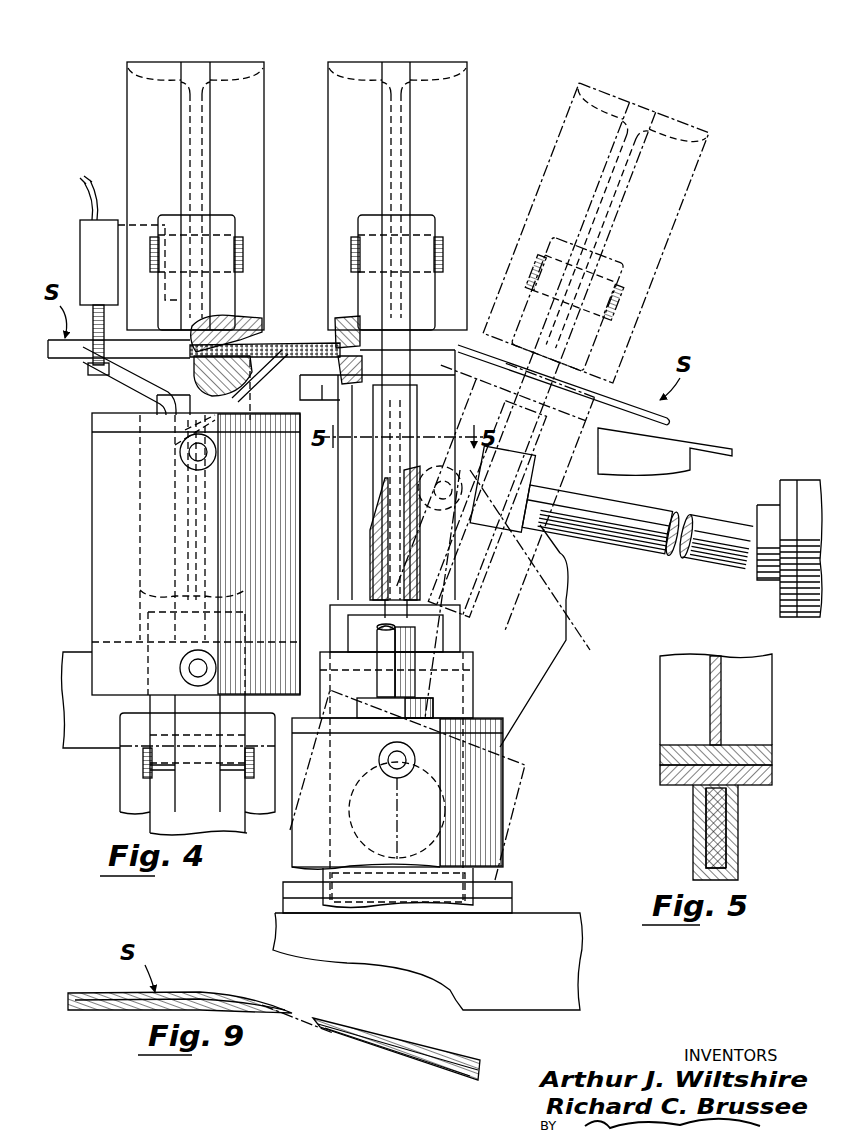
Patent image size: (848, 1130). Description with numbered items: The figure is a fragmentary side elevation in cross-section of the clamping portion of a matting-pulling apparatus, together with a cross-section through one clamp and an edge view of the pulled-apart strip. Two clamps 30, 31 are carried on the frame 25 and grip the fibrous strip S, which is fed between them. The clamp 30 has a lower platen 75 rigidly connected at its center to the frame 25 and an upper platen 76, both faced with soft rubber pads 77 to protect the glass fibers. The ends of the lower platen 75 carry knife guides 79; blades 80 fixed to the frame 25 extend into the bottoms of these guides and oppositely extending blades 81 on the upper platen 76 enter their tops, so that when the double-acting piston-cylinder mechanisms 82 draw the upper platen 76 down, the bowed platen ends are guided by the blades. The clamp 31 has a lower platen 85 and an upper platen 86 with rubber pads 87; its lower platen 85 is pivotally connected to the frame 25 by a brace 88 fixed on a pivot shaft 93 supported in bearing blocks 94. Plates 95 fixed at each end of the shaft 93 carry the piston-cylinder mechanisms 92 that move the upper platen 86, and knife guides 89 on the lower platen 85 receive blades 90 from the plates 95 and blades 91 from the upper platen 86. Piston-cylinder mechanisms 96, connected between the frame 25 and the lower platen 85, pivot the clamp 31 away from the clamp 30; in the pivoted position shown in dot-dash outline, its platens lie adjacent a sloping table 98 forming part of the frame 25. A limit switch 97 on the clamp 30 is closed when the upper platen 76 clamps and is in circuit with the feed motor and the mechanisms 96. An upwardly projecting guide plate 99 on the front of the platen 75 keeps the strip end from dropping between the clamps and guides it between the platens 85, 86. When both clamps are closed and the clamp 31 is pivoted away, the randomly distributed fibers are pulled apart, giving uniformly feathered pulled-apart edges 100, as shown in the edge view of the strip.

In FIG. 4, the frame 25 is at (536, 912).
In FIG. 4, the clamp 30 is at (192, 54).
In FIG. 4, the clamp 31 is at (404, 56).
In FIG. 4, the lower platen 75 is at (137, 406).
In FIG. 4, the upper platen 76 is at (268, 284).
In FIG. 4, the soft rubber pad 77 is at (162, 370).
In FIG. 4, the knife guide 79 is at (215, 520).
In FIG. 4, the blade 80 is at (205, 535).
In FIG. 4, the blade 81 is at (180, 430).
In FIG. 4, the double-acting piston-cylinder mechanism 82 is at (92, 592).
In FIG. 4, the lower platen 85 is at (336, 382).
In FIG. 4, the upper platen 86 is at (332, 320).
In FIG. 5, the upper platen 86 is at (660, 775).
In FIG. 4, the soft rubber pad 87 is at (248, 306).
In FIG. 4, the brace 88 is at (432, 930).
In FIG. 4, the knife guide 89 is at (378, 482).
In FIG. 5, the knife guide 89 is at (738, 818).
In FIG. 4, the blade 90 is at (380, 572).
In FIG. 4, the blade 91 is at (389, 392).
In FIG. 5, the blade 91 is at (710, 836).
In FIG. 4, the double-acting piston-cylinder mechanism 92 is at (505, 808).
In FIG. 4, the pivot shaft 93 is at (388, 776).
In FIG. 4, the bearing block 94 is at (512, 882).
In FIG. 4, the plate 95 is at (477, 676).
In FIG. 4, the double-acting piston-cylinder mechanism 96 is at (770, 492).
In FIG. 4, the limit switch 97 is at (80, 245).
In FIG. 4, the sloping table 98 is at (728, 445).
In FIG. 4, the guide plate 99 is at (270, 386).
In FIG. 9, the pulled apart edge 100 is at (284, 1004).